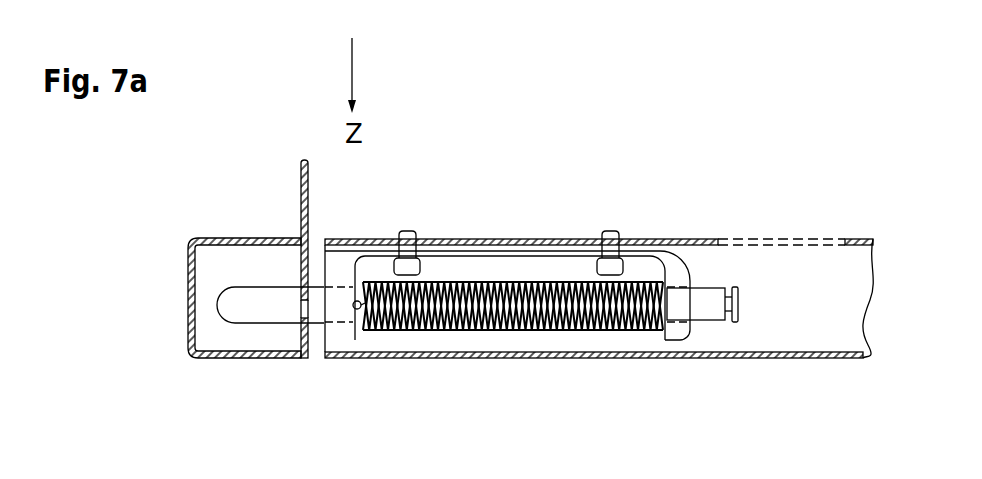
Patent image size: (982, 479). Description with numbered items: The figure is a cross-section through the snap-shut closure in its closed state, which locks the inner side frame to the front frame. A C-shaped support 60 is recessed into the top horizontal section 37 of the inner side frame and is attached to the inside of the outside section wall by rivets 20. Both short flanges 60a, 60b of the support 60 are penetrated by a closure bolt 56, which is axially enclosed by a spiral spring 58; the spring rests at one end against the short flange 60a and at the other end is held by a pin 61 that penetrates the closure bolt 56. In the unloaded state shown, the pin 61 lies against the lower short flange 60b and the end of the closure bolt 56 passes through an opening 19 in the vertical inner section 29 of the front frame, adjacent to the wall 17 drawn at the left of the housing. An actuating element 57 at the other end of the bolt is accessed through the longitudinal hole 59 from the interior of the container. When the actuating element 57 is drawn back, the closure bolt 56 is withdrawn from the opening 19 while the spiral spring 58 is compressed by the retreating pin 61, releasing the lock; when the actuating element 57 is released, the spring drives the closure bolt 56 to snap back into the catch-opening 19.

The partition plate 17 is at (301, 182).
The vertical inner section 29 is at (207, 238).
The opening 19 is at (309, 298).
The pin 61 is at (357, 301).
The rivets 20 is at (408, 232).
The spiral spring 58 is at (503, 282).
The C-shaped support 60 is at (510, 297).
The short flange 60a is at (667, 341).
The lower short flange 60b is at (355, 340).
The actuating element 57 is at (739, 298).
The longitudinal hole 59 is at (824, 239).
The closure bolt 56 is at (245, 305).
The top horizontal section 37 is at (430, 358).